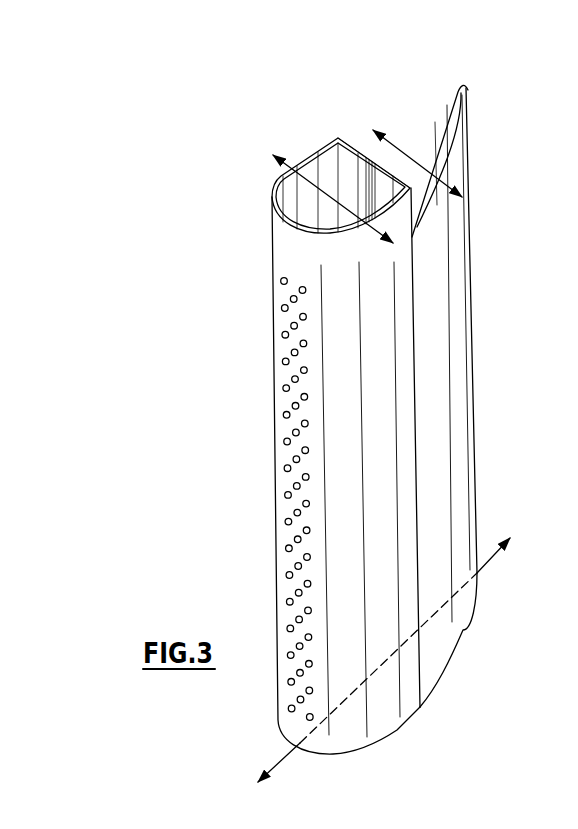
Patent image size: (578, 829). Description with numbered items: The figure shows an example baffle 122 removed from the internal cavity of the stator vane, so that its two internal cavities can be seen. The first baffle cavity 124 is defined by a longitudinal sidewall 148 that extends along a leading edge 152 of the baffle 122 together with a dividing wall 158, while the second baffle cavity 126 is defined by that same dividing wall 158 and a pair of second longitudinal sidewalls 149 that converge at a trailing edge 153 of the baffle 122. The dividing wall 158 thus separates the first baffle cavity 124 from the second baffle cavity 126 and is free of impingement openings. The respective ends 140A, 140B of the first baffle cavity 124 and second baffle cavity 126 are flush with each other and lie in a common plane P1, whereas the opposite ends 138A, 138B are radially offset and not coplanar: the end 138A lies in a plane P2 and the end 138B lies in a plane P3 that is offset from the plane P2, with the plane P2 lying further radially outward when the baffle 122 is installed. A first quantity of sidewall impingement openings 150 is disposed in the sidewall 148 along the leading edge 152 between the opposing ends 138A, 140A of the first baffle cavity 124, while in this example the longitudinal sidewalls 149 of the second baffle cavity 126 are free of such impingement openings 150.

The baffle 122 is at (247, 113).
The first baffle cavity 124 is at (298, 203).
The second baffle cavity 126 is at (428, 152).
The end of first baffle cavity 138A is at (300, 157).
The end of second baffle cavity 138B is at (412, 127).
The end of first baffle cavity 140A is at (370, 751).
The end of second baffle cavity 140B is at (456, 665).
The longitudinal sidewall 148 is at (288, 188).
The second longitudinal sidewalls 149 is at (440, 120).
The sidewall impingement openings 150 is at (285, 336).
The leading edge 152 is at (263, 511).
The trailing edge 153 is at (484, 378).
The dividing wall 158 is at (363, 158).
The plane P1 is at (492, 563).
The plane P2 is at (372, 230).
The plane P3 is at (452, 178).